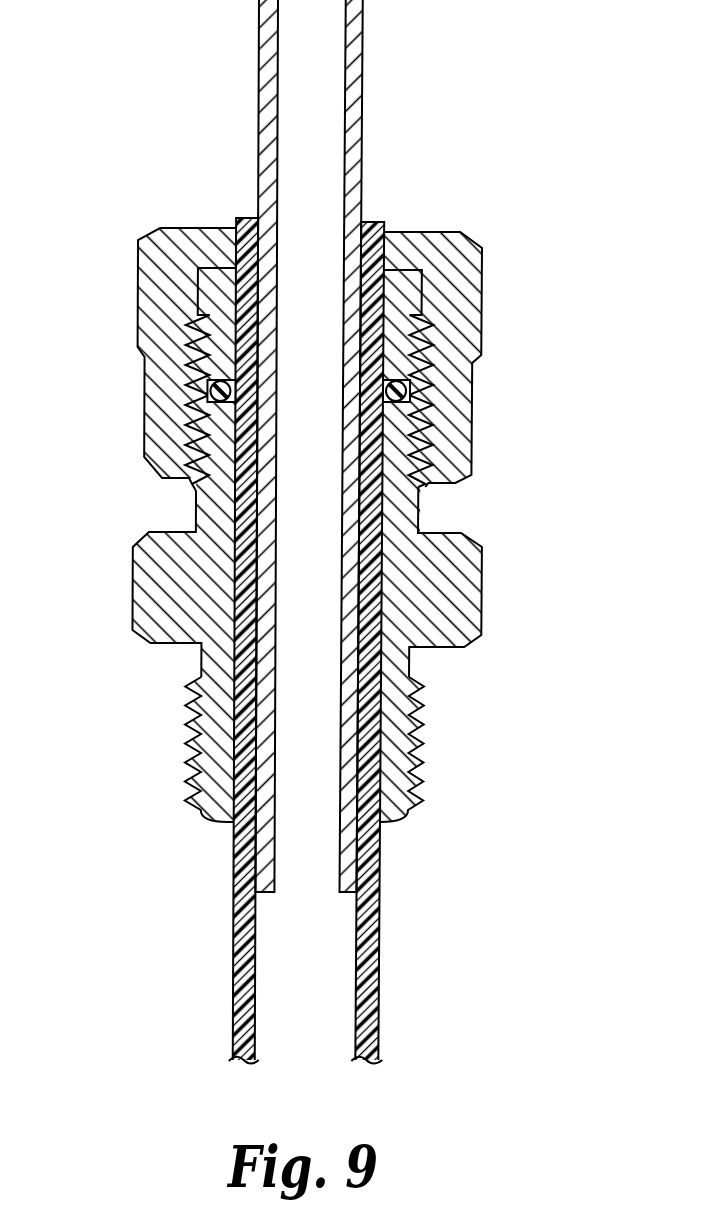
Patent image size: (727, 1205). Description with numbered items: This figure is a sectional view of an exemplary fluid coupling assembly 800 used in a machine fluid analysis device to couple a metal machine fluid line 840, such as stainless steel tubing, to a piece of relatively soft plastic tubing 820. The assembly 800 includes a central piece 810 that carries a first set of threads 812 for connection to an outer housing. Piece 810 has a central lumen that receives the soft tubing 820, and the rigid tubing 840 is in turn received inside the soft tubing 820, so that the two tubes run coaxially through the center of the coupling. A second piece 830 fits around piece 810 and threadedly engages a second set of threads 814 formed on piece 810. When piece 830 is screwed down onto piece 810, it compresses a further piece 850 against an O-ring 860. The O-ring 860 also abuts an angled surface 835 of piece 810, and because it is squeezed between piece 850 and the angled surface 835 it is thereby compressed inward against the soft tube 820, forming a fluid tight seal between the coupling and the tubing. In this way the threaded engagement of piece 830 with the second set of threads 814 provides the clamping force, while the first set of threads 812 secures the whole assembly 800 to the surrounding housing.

The fluid coupling assembly 800 is at (330, 532).
The piece 810 is at (484, 583).
The first set of threads 812 is at (415, 743).
The second set of threads 814 is at (187, 442).
The soft plastic tubing 820 is at (378, 1010).
The piece 830 is at (484, 305).
The angled surface 835 is at (413, 412).
The metal machine fluid line 840 is at (362, 98).
The piece 850 is at (401, 290).
The O-ring 860 is at (406, 385).